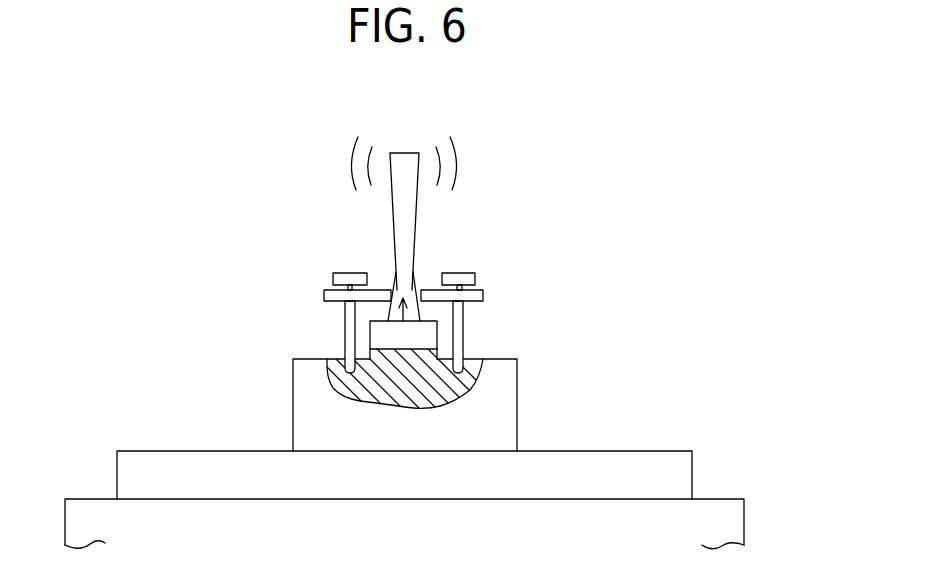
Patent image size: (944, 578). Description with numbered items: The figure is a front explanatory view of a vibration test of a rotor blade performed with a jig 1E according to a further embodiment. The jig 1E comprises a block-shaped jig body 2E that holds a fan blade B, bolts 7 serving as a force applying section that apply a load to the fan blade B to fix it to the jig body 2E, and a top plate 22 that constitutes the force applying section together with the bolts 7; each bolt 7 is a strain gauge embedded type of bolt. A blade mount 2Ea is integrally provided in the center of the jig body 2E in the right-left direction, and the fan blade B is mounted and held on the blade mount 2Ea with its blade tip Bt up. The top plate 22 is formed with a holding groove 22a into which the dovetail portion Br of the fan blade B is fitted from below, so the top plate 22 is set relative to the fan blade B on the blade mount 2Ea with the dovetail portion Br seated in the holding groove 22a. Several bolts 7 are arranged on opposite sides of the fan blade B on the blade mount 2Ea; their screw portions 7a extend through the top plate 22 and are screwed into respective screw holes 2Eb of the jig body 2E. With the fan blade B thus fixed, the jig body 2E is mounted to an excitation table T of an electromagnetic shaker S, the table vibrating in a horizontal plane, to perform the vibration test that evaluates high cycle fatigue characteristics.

The jig 1E is at (600, 222).
The fan blade B is at (393, 215).
The blade tip Bt is at (405, 158).
The dovetail portion Br is at (408, 308).
The top plate 22 is at (483, 293).
The holding groove 22a is at (409, 294).
The bolt 7 is at (342, 273).
The screw portion 7a is at (346, 357).
The jig body 2E is at (517, 417).
The blade mount 2Ea is at (396, 338).
The screw hole 2Eb is at (352, 375).
The electromagnetic shaker S is at (415, 536).
The excitation table T is at (563, 482).